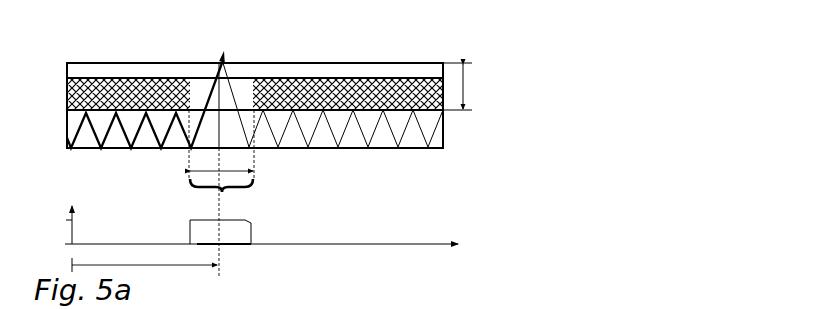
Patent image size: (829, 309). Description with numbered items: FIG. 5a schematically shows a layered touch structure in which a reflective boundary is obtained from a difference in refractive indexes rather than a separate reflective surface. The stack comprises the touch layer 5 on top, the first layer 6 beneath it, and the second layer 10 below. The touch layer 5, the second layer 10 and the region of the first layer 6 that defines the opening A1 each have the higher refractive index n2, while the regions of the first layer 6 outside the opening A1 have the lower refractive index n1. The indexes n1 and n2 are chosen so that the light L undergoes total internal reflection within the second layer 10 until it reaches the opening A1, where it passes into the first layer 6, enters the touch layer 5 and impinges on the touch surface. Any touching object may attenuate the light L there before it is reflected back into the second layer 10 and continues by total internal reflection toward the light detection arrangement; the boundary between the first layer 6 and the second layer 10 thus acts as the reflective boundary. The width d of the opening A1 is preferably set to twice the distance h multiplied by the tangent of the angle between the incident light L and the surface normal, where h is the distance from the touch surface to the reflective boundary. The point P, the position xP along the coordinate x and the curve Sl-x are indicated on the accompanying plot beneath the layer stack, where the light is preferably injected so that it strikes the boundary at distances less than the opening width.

The touch layer 5 is at (390, 72).
The first layer 6 is at (420, 80).
The second layer 10 is at (430, 123).
The lower refractive index n1 is at (66, 91).
The higher refractive index n2 is at (72, 71).
The point of incidence P is at (226, 52).
The distance h is at (460, 86).
The light L is at (442, 148).
The width of the opening d is at (221, 144).
The opening A1 is at (221, 194).
The position coordinate x is at (258, 219).
The position of point P xP is at (145, 218).
The light output distribution Sl-x is at (252, 222).